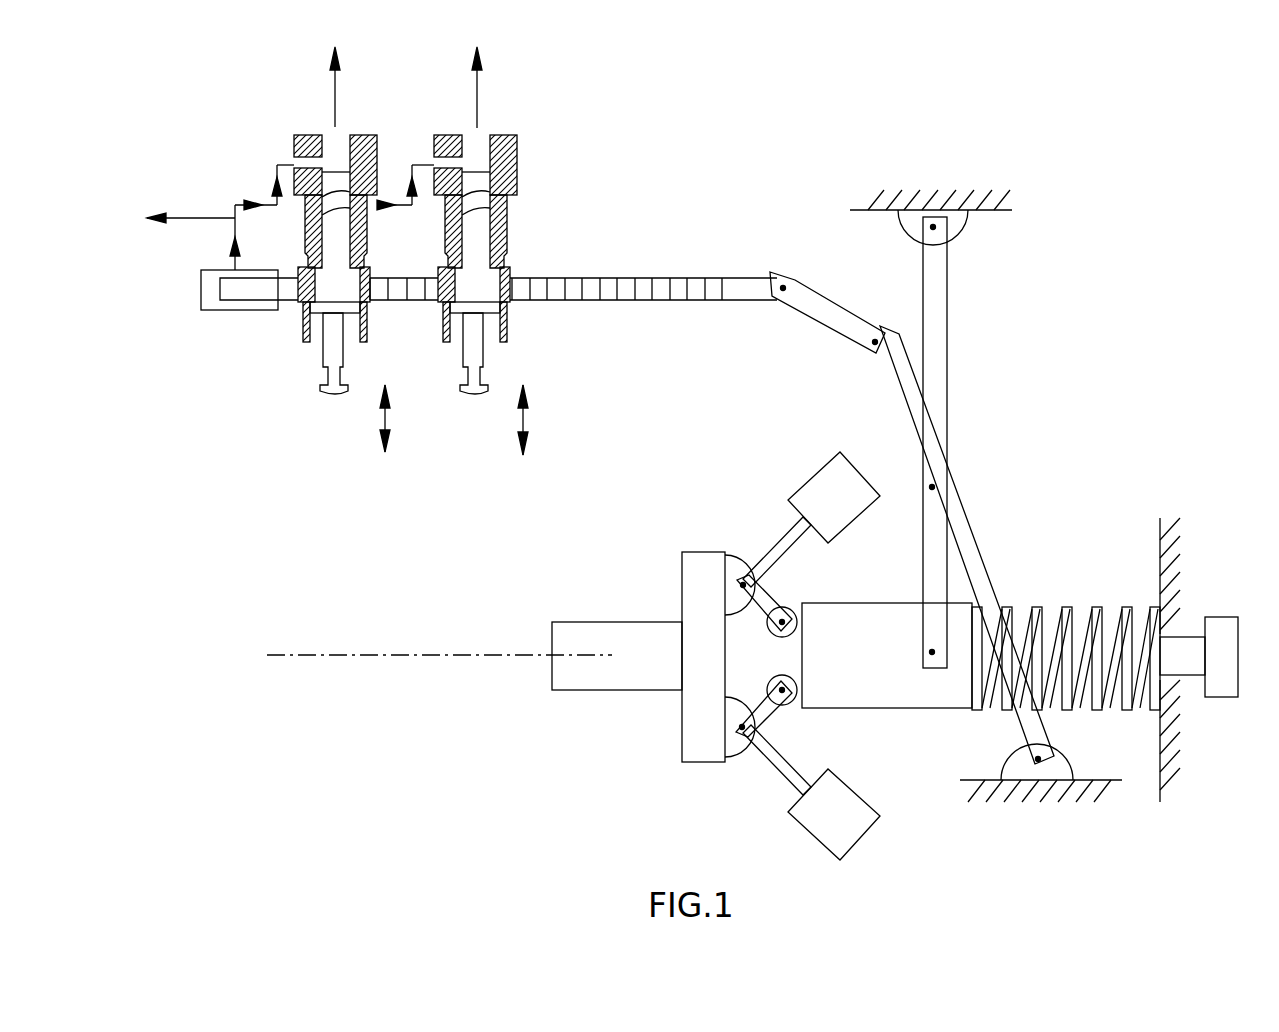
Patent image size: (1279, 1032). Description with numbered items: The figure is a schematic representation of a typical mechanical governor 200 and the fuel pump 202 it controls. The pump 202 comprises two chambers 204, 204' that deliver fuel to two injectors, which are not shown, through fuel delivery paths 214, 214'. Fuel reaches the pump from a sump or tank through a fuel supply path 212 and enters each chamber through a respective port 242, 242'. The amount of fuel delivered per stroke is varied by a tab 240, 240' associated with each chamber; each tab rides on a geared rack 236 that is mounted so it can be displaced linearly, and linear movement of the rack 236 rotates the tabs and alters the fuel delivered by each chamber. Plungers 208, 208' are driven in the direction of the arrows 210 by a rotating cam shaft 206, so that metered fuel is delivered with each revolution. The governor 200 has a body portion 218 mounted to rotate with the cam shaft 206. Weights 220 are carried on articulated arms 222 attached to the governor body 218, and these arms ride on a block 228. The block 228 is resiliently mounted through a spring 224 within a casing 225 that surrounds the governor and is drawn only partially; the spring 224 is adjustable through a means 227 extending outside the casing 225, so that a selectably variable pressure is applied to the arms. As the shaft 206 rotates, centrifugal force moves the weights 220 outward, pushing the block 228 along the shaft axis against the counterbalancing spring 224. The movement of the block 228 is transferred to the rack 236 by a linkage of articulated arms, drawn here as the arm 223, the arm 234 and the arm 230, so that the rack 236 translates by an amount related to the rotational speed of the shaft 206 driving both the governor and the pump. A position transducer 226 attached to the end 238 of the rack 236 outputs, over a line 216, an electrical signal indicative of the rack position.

The governor 200 is at (682, 795).
The pump 202 is at (612, 150).
The chamber 204 is at (319, 197).
The chamber 204' is at (460, 196).
The cam shaft 206 is at (357, 657).
The plunger 208 is at (301, 353).
The plunger 208' is at (446, 353).
The arrows 210 is at (540, 420).
The fuel supply path 212 is at (286, 208).
The fuel delivery path 214 is at (358, 87).
The fuel delivery path 214' is at (502, 87).
The line 216 is at (190, 216).
The body portion 218 is at (623, 685).
The weights 220 is at (818, 477).
The articulated arms 222 is at (782, 538).
The lever 223 is at (958, 533).
The spring 224 is at (1067, 613).
The casing 225 is at (990, 212).
The position transducer 226 is at (205, 280).
The adjusting means 227 is at (1222, 693).
The block 228 is at (823, 607).
The articulated arm 230 is at (942, 350).
The articulated arm 234 is at (842, 308).
The geared rack 236 is at (607, 280).
The end of rack 238 is at (235, 295).
The tab 240 is at (357, 304).
The tab 240' is at (500, 304).
The port 242 is at (266, 148).
The port 242' is at (406, 148).